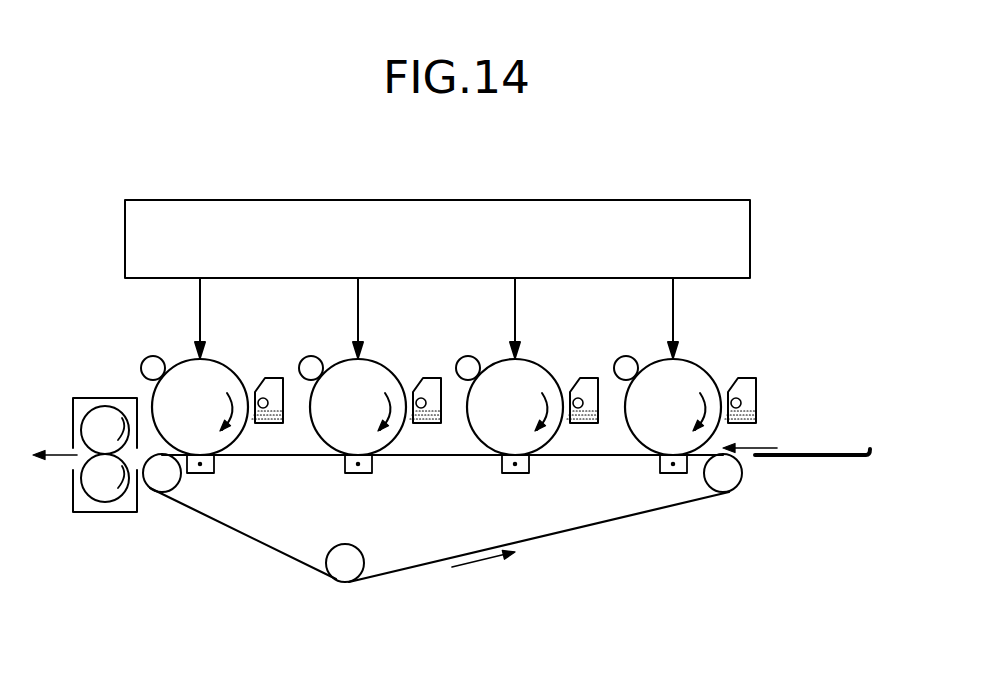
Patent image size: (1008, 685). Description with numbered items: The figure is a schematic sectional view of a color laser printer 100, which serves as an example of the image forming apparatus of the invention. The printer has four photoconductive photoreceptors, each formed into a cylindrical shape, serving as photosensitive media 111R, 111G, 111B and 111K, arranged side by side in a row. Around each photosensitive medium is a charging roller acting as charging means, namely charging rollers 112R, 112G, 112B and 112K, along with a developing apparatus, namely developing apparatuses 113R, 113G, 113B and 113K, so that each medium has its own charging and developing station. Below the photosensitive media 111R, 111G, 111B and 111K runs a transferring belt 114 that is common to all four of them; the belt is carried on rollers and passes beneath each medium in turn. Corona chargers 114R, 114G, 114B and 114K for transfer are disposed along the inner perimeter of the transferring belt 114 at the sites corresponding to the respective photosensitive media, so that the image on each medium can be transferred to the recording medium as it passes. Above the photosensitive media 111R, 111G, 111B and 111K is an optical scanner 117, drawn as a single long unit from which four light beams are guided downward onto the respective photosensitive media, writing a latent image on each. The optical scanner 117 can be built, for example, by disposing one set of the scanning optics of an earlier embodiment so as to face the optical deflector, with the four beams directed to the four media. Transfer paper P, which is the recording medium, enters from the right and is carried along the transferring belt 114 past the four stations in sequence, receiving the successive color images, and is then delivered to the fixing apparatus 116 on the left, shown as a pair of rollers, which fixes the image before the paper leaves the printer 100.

The color laser printer 100 is at (778, 182).
The optical scanner 117 is at (750, 245).
The photosensitive medium 111K is at (227, 425).
The photosensitive medium 111B is at (385, 425).
The photosensitive medium 111G is at (542, 425).
The photosensitive medium 111R is at (700, 425).
The charging roller 112K is at (153, 356).
The charging roller 112B is at (311, 356).
The charging roller 112G is at (468, 356).
The charging roller 112R is at (626, 356).
The developing apparatus 113K is at (266, 378).
The developing apparatus 113B is at (424, 378).
The developing apparatus 113G is at (581, 378).
The developing apparatus 113R is at (739, 378).
The corona charger for transfer 114K is at (202, 473).
The corona charger for transfer 114B is at (360, 473).
The corona charger for transfer 114G is at (517, 473).
The corona charger for transfer 114R is at (665, 473).
The transferring belt 114 is at (415, 567).
The fixing apparatus 116 is at (107, 512).
The transfer paper P is at (803, 458).